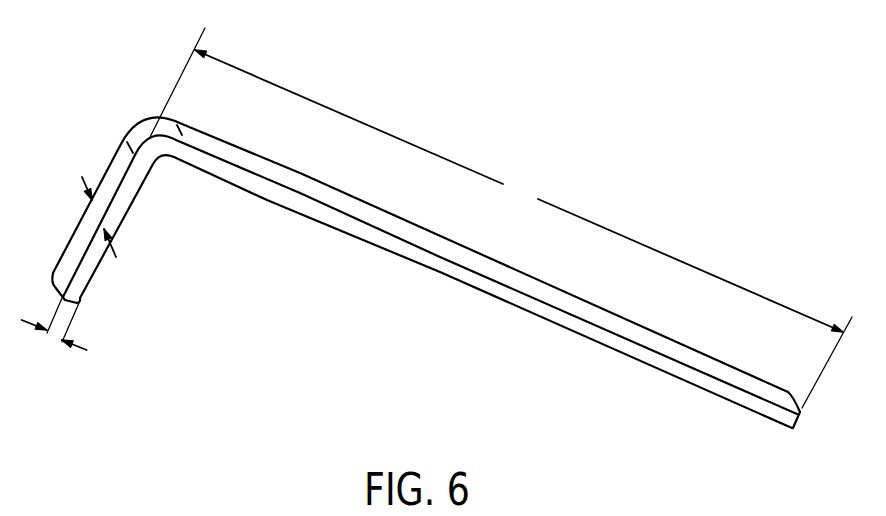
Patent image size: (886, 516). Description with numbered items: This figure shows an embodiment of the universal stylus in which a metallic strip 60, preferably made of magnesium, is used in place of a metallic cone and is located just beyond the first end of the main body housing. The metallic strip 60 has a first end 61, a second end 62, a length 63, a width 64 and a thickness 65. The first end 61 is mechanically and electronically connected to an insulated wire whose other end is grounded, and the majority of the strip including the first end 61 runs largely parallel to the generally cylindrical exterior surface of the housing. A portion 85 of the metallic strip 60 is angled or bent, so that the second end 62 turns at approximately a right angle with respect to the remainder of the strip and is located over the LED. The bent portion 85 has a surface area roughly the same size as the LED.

The metallic strip 60 is at (515, 280).
The first end 61 is at (797, 428).
The second end 62 is at (77, 295).
The length 63 is at (501, 218).
The width 64 is at (86, 350).
The thickness 65 is at (82, 177).
The portion 85 is at (118, 167).